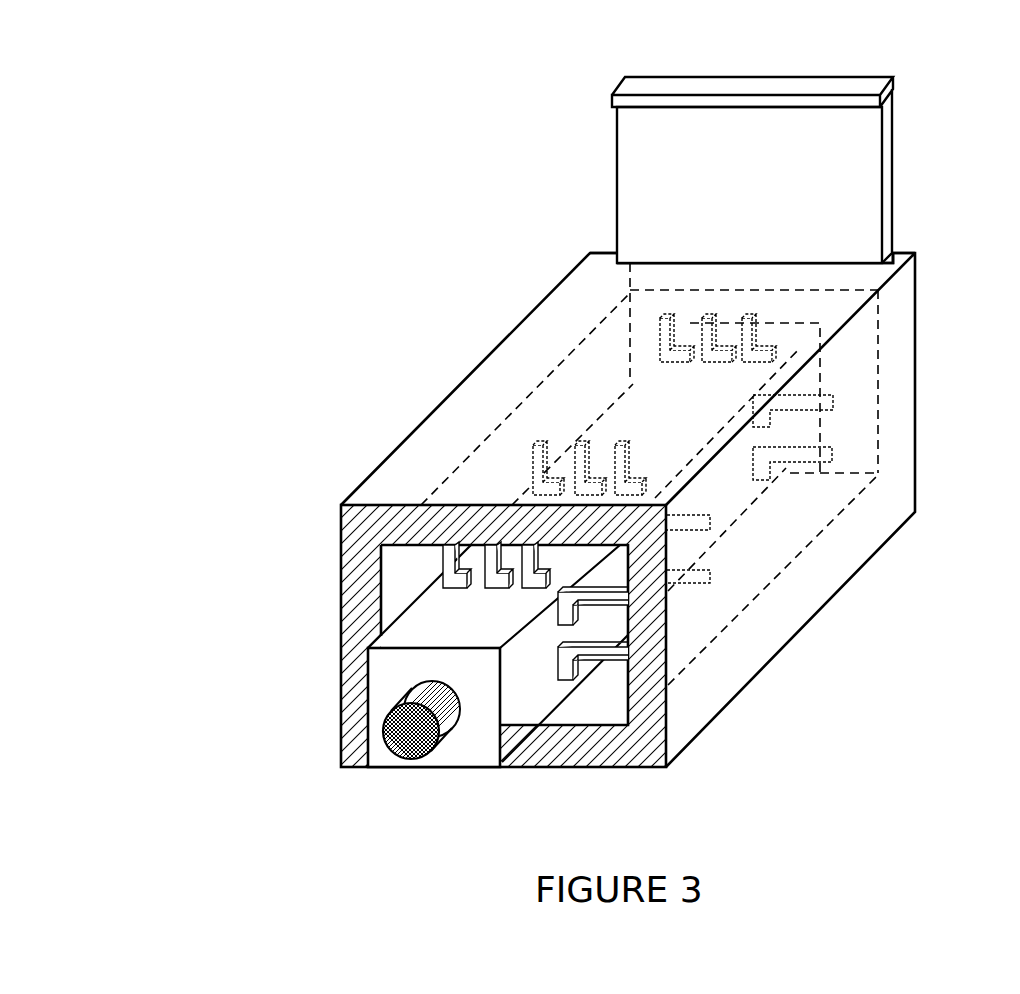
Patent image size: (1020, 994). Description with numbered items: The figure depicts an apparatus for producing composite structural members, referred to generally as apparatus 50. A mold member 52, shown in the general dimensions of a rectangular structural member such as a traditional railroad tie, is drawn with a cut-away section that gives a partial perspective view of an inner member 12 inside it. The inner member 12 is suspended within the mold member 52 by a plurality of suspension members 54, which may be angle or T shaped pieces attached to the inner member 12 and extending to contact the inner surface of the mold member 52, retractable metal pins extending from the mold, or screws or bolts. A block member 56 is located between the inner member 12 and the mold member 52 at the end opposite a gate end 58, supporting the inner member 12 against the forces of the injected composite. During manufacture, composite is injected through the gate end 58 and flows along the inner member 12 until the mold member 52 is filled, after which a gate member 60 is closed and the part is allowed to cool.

The apparatus for manufacturing the load bearing structure 50 is at (407, 380).
The mold member 52 is at (617, 340).
The suspension members 54 is at (770, 398).
The block member 56 is at (378, 723).
The gate end 58 is at (580, 218).
The gate member 60 is at (863, 130).
The inner member 12 is at (440, 622).